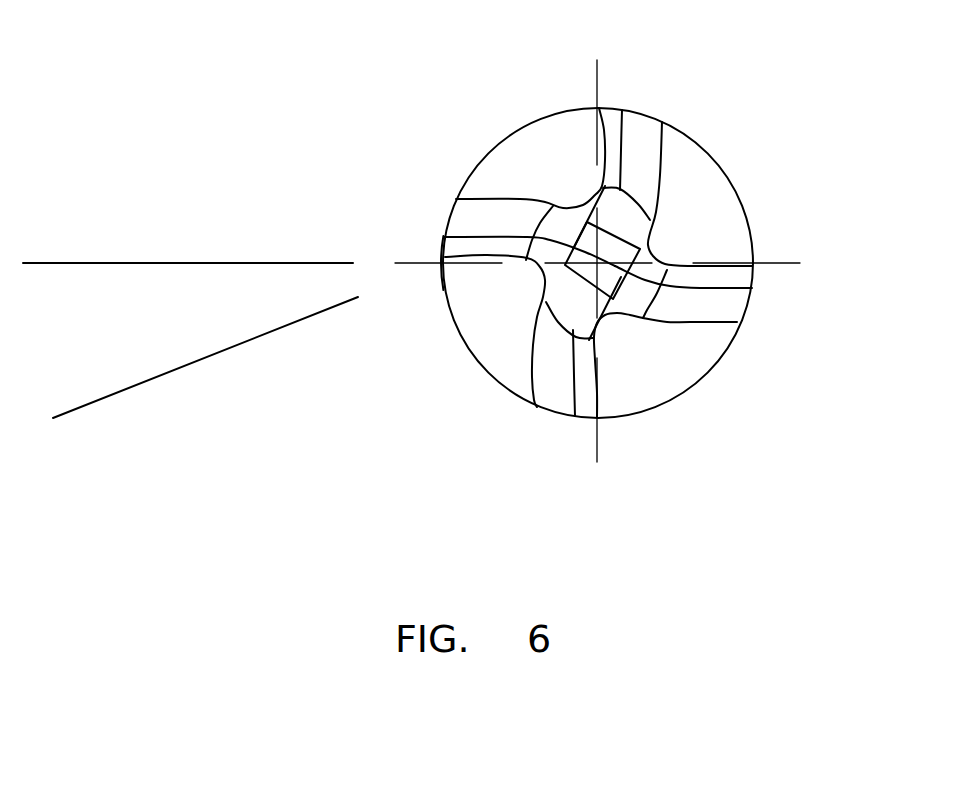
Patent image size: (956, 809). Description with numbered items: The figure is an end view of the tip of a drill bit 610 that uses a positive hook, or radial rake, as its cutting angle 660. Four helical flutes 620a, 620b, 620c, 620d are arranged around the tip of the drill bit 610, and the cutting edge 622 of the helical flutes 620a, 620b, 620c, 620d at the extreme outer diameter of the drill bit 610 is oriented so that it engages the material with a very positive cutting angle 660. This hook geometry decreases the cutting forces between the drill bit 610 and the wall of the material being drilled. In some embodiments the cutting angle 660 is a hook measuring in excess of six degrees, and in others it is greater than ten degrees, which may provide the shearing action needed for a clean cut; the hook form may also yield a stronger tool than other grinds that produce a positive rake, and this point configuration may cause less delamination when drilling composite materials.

The drill bit 610 is at (412, 112).
The helical flute 620a is at (447, 222).
The helical flute 620b is at (753, 303).
The helical flute 620c is at (552, 408).
The helical flute 620d is at (649, 113).
The cutting edge 622 is at (436, 266).
The cutting angle 660 is at (51, 264).